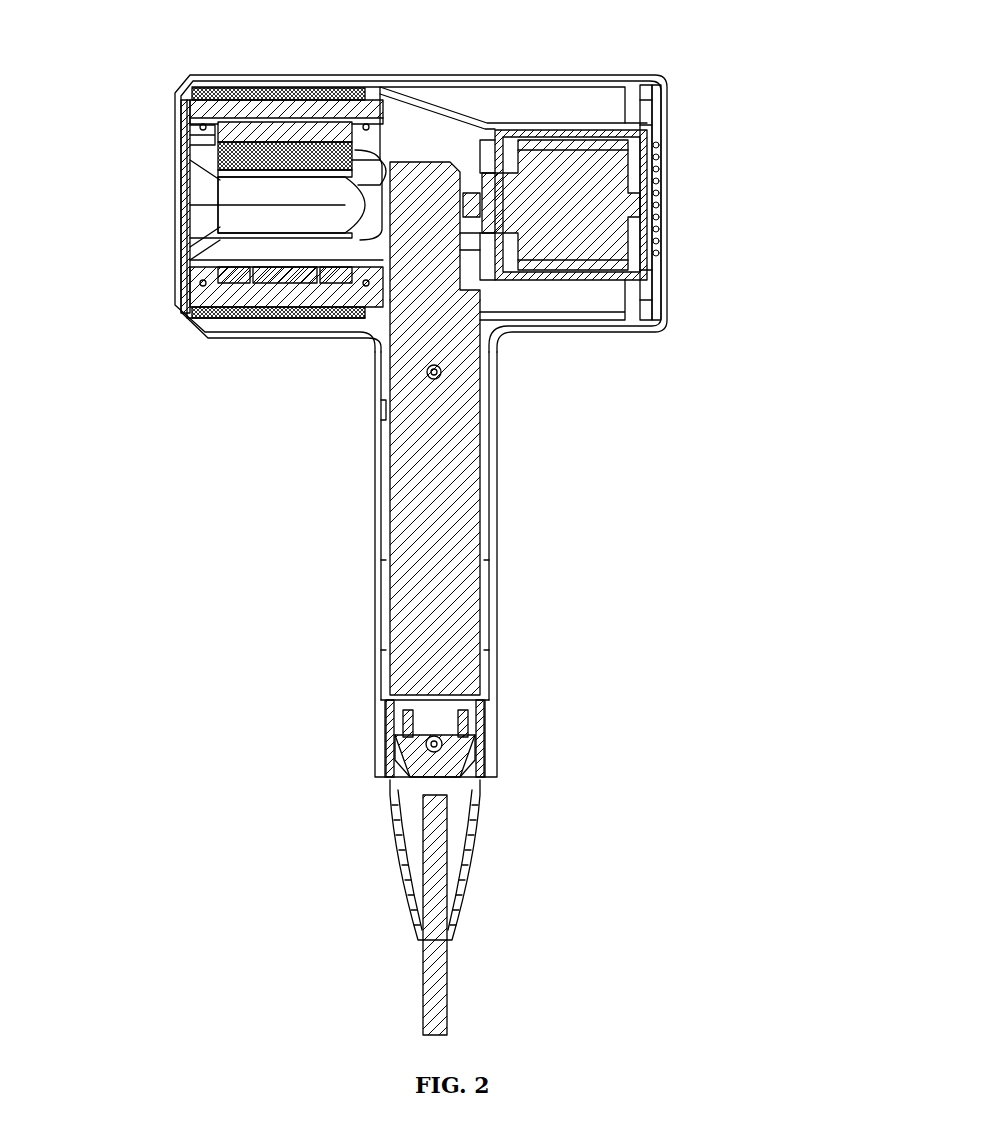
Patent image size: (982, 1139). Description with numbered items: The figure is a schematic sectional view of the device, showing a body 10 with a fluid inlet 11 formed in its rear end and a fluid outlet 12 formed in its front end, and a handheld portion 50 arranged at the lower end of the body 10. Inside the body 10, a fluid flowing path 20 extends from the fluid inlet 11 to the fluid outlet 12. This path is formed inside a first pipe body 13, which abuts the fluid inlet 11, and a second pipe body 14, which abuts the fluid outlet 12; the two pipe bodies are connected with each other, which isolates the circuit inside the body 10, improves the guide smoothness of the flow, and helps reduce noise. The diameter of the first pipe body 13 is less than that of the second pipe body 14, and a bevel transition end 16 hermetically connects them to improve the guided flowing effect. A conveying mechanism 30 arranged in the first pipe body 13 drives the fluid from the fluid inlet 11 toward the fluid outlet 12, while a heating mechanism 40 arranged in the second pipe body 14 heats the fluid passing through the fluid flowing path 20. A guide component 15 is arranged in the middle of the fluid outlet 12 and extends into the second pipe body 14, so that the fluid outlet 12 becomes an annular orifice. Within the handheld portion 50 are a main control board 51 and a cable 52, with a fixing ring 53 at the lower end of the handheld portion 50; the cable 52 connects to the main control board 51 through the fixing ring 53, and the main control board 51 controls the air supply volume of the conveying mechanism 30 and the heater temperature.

The body 10 is at (458, 80).
The fluid inlet 11 is at (663, 185).
The fluid outlet 12 is at (185, 135).
The first pipe body 13 is at (540, 128).
The second pipe body 14 is at (314, 90).
The guide component 15 is at (220, 205).
The bevel transition end 16 is at (425, 102).
The fluid flowing path 20 is at (470, 250).
The conveying mechanism 30 is at (585, 208).
The heating mechanism 40 is at (285, 282).
The handheld portion 50 is at (378, 455).
The main control board 51 is at (462, 455).
The cable 52 is at (434, 865).
The fixing ring 53 is at (374, 737).